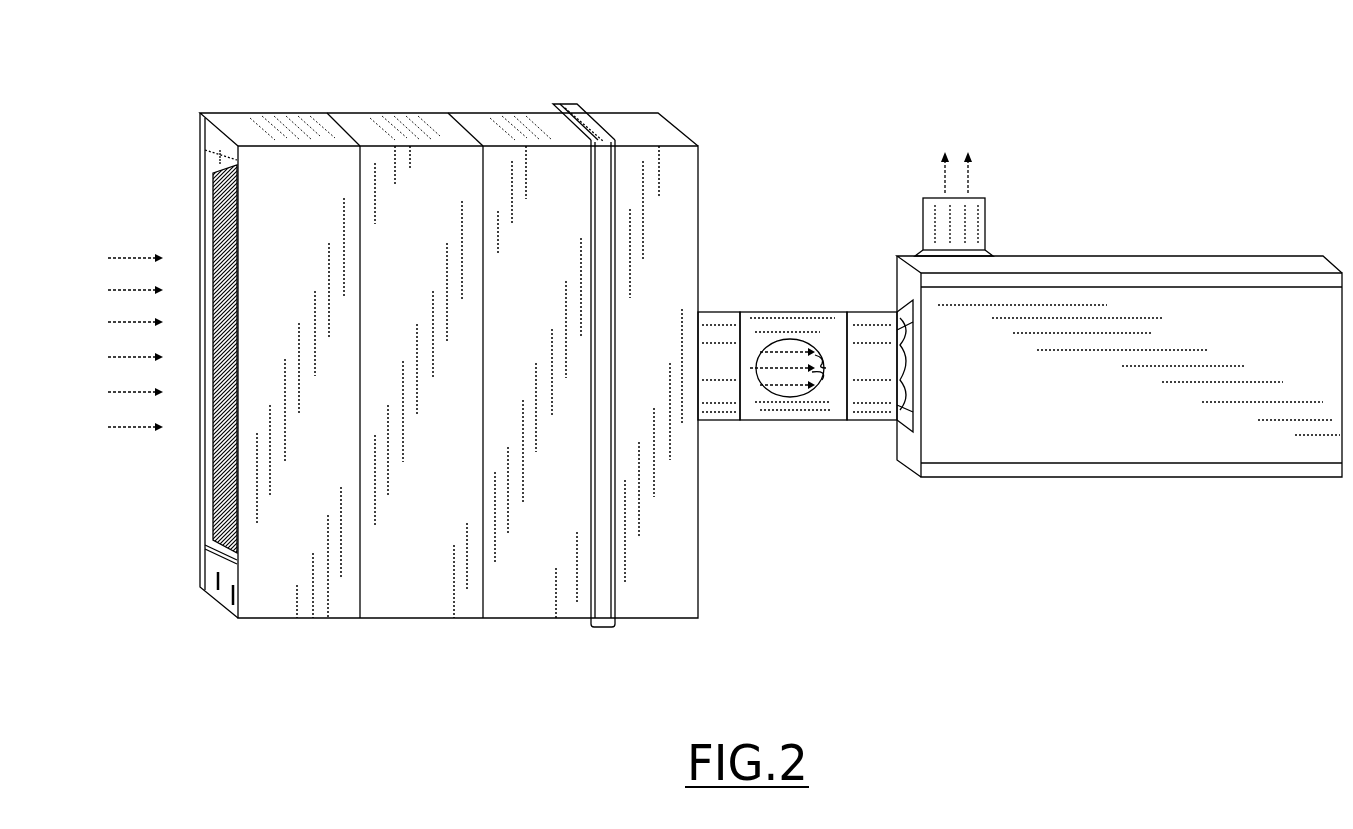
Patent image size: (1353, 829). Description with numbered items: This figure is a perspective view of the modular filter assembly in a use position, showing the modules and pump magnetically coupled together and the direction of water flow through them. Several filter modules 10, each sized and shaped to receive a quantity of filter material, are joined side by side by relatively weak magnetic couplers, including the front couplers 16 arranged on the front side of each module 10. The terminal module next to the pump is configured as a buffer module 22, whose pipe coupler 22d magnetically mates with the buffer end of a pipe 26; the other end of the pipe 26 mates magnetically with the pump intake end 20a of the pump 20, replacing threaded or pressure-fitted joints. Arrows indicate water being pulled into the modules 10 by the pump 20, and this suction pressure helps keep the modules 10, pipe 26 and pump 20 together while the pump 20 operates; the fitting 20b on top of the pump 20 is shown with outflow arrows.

The module 10 is at (538, 181).
The buffer module 22 is at (670, 178).
The pipe coupler 22d is at (725, 313).
The pipe 26 is at (745, 420).
The pump 20 is at (1113, 303).
The pump intake end 20a is at (879, 410).
The outlet vent 20b is at (988, 216).
The front coupler 16 is at (200, 583).